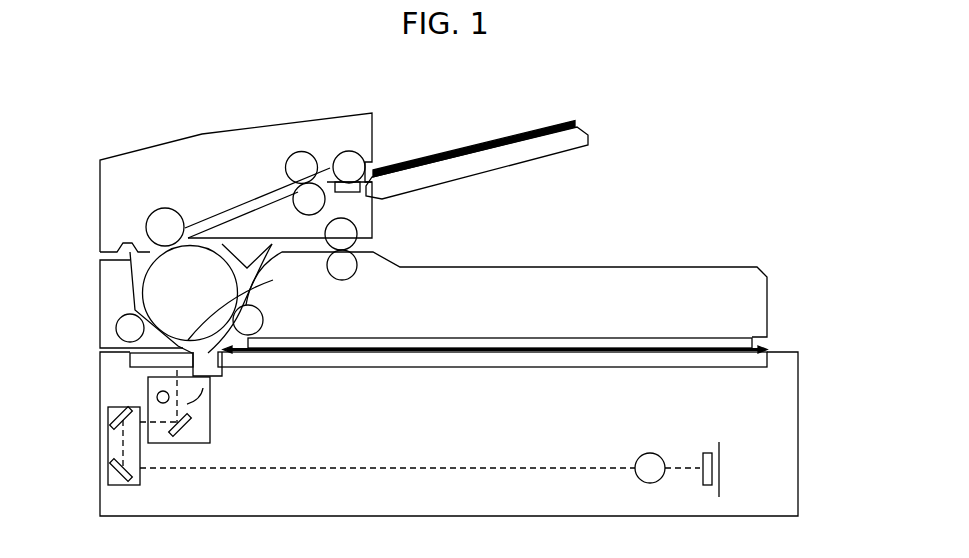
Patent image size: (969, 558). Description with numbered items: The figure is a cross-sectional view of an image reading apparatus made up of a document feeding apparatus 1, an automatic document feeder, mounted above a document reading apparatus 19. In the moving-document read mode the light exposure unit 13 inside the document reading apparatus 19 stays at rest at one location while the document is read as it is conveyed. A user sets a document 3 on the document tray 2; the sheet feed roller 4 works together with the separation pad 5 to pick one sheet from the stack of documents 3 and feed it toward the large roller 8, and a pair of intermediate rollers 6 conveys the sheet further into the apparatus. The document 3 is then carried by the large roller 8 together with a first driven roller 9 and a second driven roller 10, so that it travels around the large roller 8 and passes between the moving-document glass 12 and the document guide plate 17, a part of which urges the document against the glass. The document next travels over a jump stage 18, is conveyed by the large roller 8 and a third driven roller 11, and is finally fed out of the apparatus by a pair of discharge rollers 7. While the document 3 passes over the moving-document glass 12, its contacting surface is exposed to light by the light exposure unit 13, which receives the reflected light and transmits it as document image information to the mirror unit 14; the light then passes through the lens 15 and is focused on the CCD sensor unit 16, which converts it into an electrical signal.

The document feeding apparatus 1 is at (757, 295).
The document tray 2 is at (582, 138).
The document 3 is at (555, 124).
The sheet feed roller 4 is at (352, 158).
The separation pad 5 is at (352, 191).
The intermediate rollers 6 is at (300, 168).
The discharge rollers 7 is at (347, 272).
The large roller 8 is at (150, 283).
The first driven roller 9 is at (165, 220).
The second driven roller 10 is at (120, 328).
The third driven roller 11 is at (254, 319).
The moving-document glass 12 is at (130, 358).
The light exposure unit 13 is at (210, 425).
The mirror unit 14 is at (108, 470).
The lens 15 is at (648, 452).
The CCD sensor unit 16 is at (705, 452).
The document guide plate 17 is at (273, 280).
The jump stage 18 is at (206, 368).
The document reading apparatus 19 is at (785, 392).